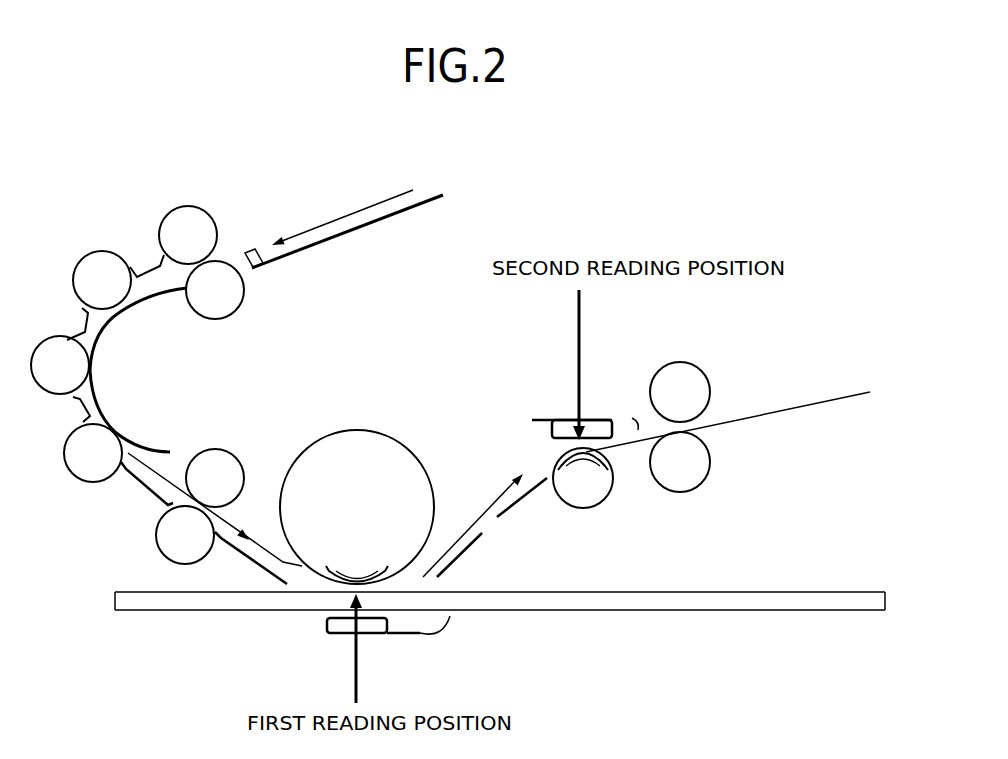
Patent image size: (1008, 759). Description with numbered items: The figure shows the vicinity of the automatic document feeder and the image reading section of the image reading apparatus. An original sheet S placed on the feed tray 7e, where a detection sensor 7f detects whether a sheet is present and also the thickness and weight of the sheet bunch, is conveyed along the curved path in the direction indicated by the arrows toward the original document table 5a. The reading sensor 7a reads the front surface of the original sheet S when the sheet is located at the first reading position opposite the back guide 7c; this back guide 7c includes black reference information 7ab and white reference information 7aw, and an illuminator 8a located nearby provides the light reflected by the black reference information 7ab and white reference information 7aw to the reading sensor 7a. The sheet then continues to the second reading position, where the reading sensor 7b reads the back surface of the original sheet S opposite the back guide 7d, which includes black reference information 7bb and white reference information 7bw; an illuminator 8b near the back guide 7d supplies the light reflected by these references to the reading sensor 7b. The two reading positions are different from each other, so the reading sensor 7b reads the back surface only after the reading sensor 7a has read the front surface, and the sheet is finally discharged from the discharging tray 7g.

The original document table 5a is at (798, 591).
The reading sensor 7a is at (402, 636).
The black reference information 7ab is at (340, 570).
The white reference information 7aw is at (372, 572).
The reading sensor 7b is at (537, 414).
The black reference information 7bb is at (556, 462).
The white reference information 7bw is at (615, 465).
The back guide 7c is at (337, 428).
The back guide 7d is at (590, 502).
The feed tray 7e is at (435, 196).
The detection sensor 7f is at (248, 250).
The discharging tray 7g is at (773, 402).
The illuminator 8a is at (440, 631).
The illuminator 8b is at (633, 418).
The original sheet S is at (338, 216).